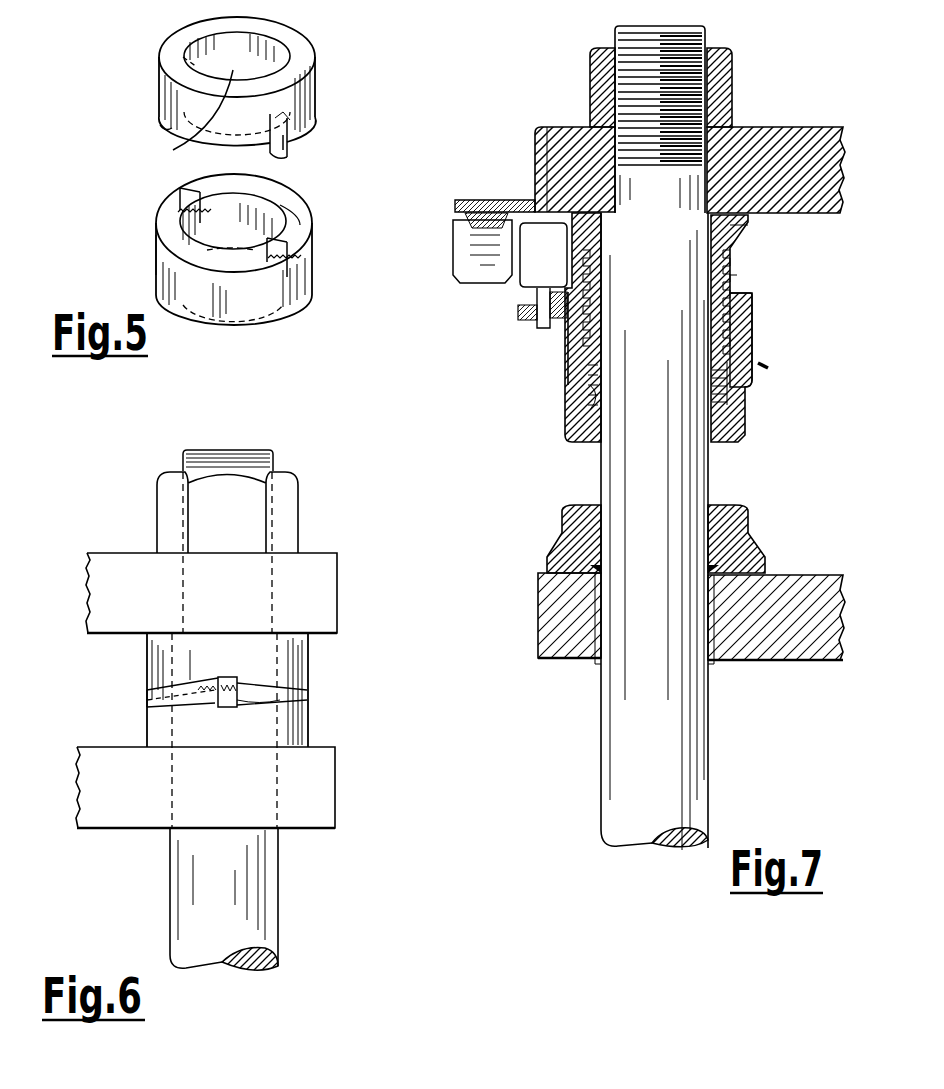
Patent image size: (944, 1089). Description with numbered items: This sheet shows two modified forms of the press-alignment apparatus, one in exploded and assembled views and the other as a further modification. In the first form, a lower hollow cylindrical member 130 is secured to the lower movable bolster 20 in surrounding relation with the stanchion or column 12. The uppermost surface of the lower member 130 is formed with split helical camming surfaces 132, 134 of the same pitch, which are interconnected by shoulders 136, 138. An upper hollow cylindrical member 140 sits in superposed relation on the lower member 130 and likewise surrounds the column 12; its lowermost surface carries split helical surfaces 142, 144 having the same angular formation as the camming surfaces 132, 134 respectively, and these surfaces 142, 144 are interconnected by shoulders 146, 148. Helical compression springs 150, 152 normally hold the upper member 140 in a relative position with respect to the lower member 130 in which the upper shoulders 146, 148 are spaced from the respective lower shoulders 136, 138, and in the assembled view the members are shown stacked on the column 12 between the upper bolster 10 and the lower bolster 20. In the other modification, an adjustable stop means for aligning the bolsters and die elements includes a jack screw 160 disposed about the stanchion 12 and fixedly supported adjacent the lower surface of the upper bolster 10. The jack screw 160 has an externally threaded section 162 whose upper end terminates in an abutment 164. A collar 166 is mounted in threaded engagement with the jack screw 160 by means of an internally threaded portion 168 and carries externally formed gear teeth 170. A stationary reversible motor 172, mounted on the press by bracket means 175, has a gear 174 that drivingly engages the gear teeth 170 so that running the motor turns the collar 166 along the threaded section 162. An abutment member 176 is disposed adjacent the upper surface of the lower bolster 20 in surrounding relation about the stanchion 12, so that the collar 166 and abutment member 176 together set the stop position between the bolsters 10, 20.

In FIG. 6, the upper bolster 10 is at (338, 556).
In FIG. 7, the upper bolster 10 is at (822, 127).
In FIG. 6, the stanchion 12 is at (279, 894).
In FIG. 7, the stanchion 12 is at (600, 759).
In FIG. 6, the lower movable bolster 20 is at (337, 795).
In FIG. 7, the lower movable bolster 20 is at (798, 575).
In FIG. 5, the lower hollow cylindrical member 130 is at (305, 194).
In FIG. 6, the lower hollow cylindrical member 130 is at (140, 708).
In FIG. 5, the split helical camming surface 132 is at (157, 242).
In FIG. 5, the split helical camming surface 134 is at (300, 218).
In FIG. 5, the shoulder 136 is at (180, 196).
In FIG. 5, the shoulder 138 is at (290, 262).
In FIG. 6, the shoulder 138 is at (212, 697).
In FIG. 5, the upper hollow cylindrical member 140 is at (308, 38).
In FIG. 6, the upper hollow cylindrical member 140 is at (312, 668).
In FIG. 5, the split helical surface 142 is at (160, 128).
In FIG. 5, the split helical surface 144 is at (173, 150).
In FIG. 5, the shoulder 146 is at (183, 57).
In FIG. 5, the shoulder 148 is at (288, 158).
In FIG. 6, the shoulder 148 is at (234, 708).
In FIG. 5, the helical compression spring 150 is at (178, 210).
In FIG. 5, the helical compression spring 152 is at (300, 246).
In FIG. 6, the helical compression spring 152 is at (230, 708).
In FIG. 7, the jack screw 160 is at (742, 258).
In FIG. 7, the externally threaded section 162 is at (735, 278).
In FIG. 7, the abutment 164 is at (737, 228).
In FIG. 7, the collar 166 is at (563, 392).
In FIG. 7, the internally threaded portion 168 is at (566, 428).
In FIG. 7, the gear teeth 170 is at (566, 352).
In FIG. 7, the stationary reversible motor 172 is at (458, 280).
In FIG. 7, the gear 174 is at (520, 322).
In FIG. 7, the bracket means 175 is at (505, 200).
In FIG. 7, the abutment member 176 is at (740, 538).